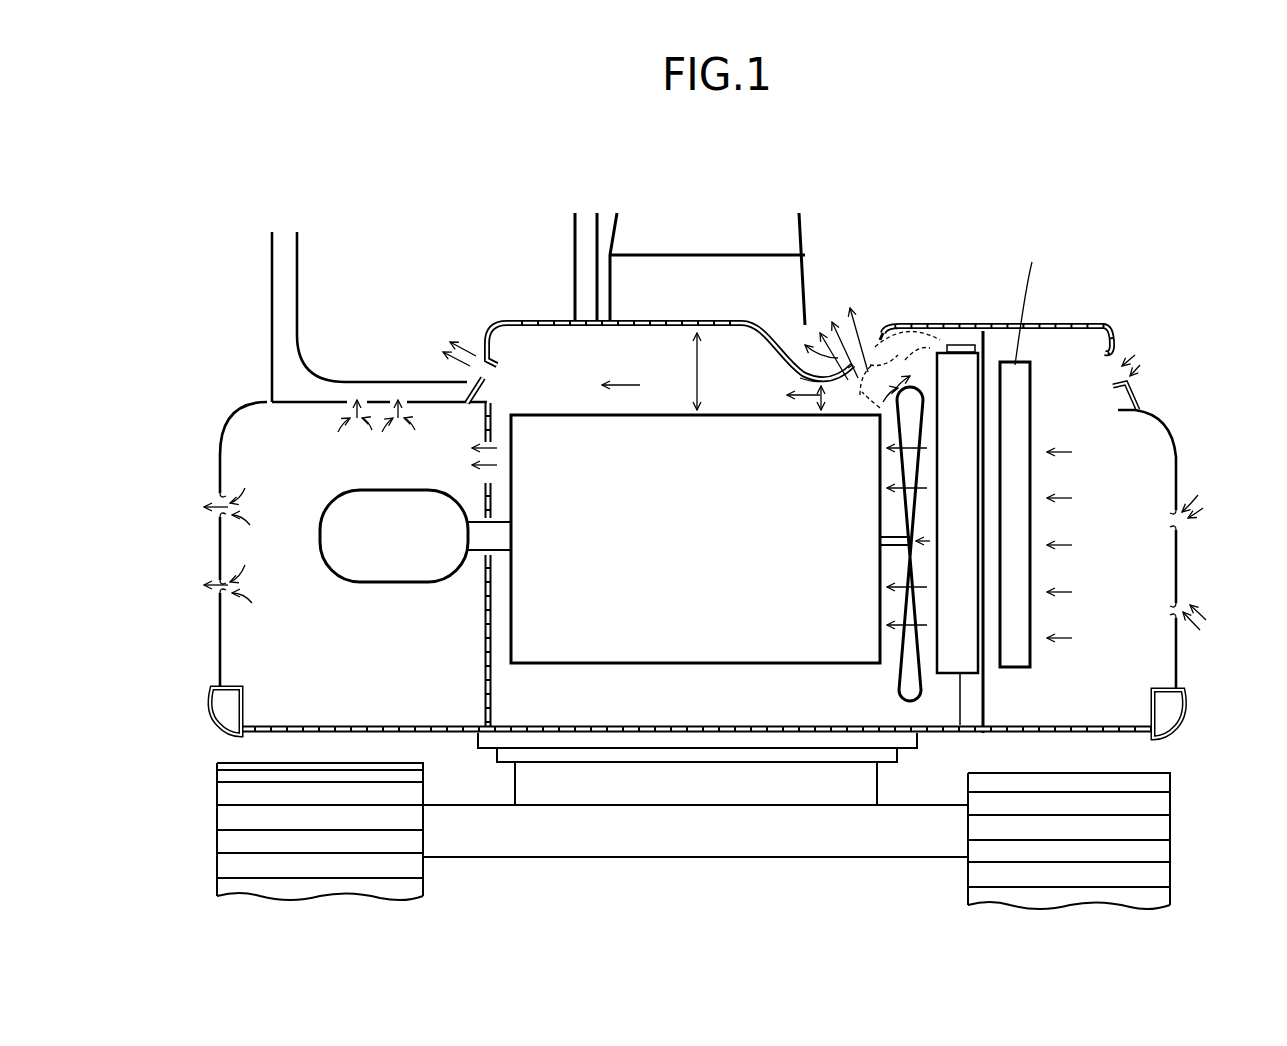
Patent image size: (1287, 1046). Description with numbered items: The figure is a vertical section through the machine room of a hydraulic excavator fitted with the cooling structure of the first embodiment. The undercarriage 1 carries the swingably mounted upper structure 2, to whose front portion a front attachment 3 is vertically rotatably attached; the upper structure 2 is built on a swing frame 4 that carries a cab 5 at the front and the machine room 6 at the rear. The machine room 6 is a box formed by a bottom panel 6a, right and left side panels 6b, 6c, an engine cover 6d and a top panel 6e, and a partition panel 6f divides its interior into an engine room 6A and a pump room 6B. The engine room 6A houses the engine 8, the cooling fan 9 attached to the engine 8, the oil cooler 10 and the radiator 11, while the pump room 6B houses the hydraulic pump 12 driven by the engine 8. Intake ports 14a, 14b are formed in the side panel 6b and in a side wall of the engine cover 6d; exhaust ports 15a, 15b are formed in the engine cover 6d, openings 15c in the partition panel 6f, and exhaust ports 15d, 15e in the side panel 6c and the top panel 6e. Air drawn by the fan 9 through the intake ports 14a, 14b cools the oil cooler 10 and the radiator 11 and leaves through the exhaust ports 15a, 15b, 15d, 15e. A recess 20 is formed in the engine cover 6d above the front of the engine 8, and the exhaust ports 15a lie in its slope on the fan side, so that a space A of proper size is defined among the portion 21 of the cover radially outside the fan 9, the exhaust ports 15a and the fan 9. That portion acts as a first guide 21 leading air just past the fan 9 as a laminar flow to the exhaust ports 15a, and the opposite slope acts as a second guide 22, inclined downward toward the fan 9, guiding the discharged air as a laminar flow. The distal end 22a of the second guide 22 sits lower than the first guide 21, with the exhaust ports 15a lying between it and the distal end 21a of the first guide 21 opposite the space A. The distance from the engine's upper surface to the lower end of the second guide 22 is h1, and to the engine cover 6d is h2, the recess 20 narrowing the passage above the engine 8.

The undercarriage 1 is at (1175, 797).
The upper structure 2 is at (1138, 328).
The front attachment 3 is at (800, 230).
The swing frame 4 is at (215, 712).
The cab 5 is at (315, 305).
The machine room 6 is at (1040, 322).
The bottom panel 6a is at (1020, 733).
The right side panel 6b is at (1175, 418).
The left side panel 6c is at (220, 452).
The engine cover 6d is at (683, 323).
The top panel 6e is at (330, 400).
The partition panel 6f is at (492, 692).
The engine room 6A is at (723, 703).
The pump room 6B is at (385, 694).
The engine 8 is at (555, 413).
The cooling fan 9 is at (900, 685).
The oil cooler 10 is at (1025, 660).
The radiator 11 is at (955, 660).
The hydraulic pump 12 is at (368, 490).
The intake port 14a is at (1180, 602).
The intake port 14b is at (1128, 378).
The exhaust ports 15a is at (838, 320).
The exhaust port 15b is at (477, 355).
The openings 15c is at (498, 465).
The exhaust ports 15d is at (218, 583).
The exhaust ports 15e is at (366, 400).
The recess 20 is at (812, 383).
The first guide 21 is at (925, 326).
The distal end of first guide 21a is at (878, 332).
The second guide 22 is at (790, 355).
The distal end of second guide 22a is at (853, 383).
The distance h1 is at (821, 400).
The distance h2 is at (697, 395).
The space A is at (922, 348).